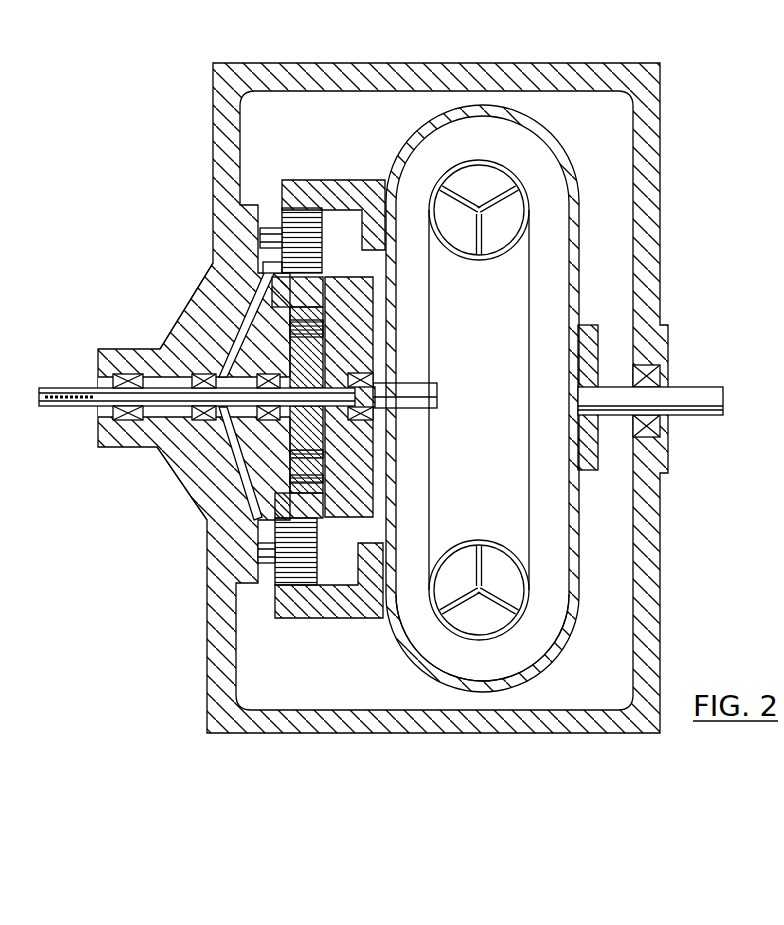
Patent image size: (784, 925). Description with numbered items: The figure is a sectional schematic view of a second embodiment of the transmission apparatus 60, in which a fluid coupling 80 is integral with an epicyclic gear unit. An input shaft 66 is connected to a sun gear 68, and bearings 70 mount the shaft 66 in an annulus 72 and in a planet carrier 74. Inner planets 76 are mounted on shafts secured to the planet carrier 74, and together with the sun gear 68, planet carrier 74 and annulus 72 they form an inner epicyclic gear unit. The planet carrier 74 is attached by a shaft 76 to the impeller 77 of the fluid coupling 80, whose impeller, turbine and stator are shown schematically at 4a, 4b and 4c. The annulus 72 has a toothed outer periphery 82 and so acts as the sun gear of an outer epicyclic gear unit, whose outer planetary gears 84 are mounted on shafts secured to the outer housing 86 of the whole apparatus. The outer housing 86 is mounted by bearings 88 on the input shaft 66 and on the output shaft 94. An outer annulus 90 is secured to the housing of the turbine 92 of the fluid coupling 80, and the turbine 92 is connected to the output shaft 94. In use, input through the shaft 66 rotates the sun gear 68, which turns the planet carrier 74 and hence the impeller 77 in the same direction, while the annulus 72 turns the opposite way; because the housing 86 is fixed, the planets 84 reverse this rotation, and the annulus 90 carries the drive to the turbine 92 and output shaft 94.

The impeller 4a is at (453, 220).
The turbine 4b is at (505, 217).
The stator 4c is at (482, 182).
The transmission apparatus 60 is at (246, 737).
The input shaft 66 is at (63, 398).
The sun gear 68 is at (295, 492).
The bearings 70 is at (350, 374).
The annulus 72 is at (258, 315).
The planet carrier 74 is at (368, 307).
The planets 76 is at (300, 498).
The impeller 77 is at (522, 518).
The fluid coupling 80 is at (563, 643).
The toothed outer periphery 82 is at (248, 263).
The outer planetary gears 84 is at (282, 225).
The outer housing 86 is at (238, 160).
The bearings 88 is at (132, 374).
The outer annulus 90 is at (342, 182).
The turbine 92 is at (563, 155).
The output shaft 94 is at (707, 392).